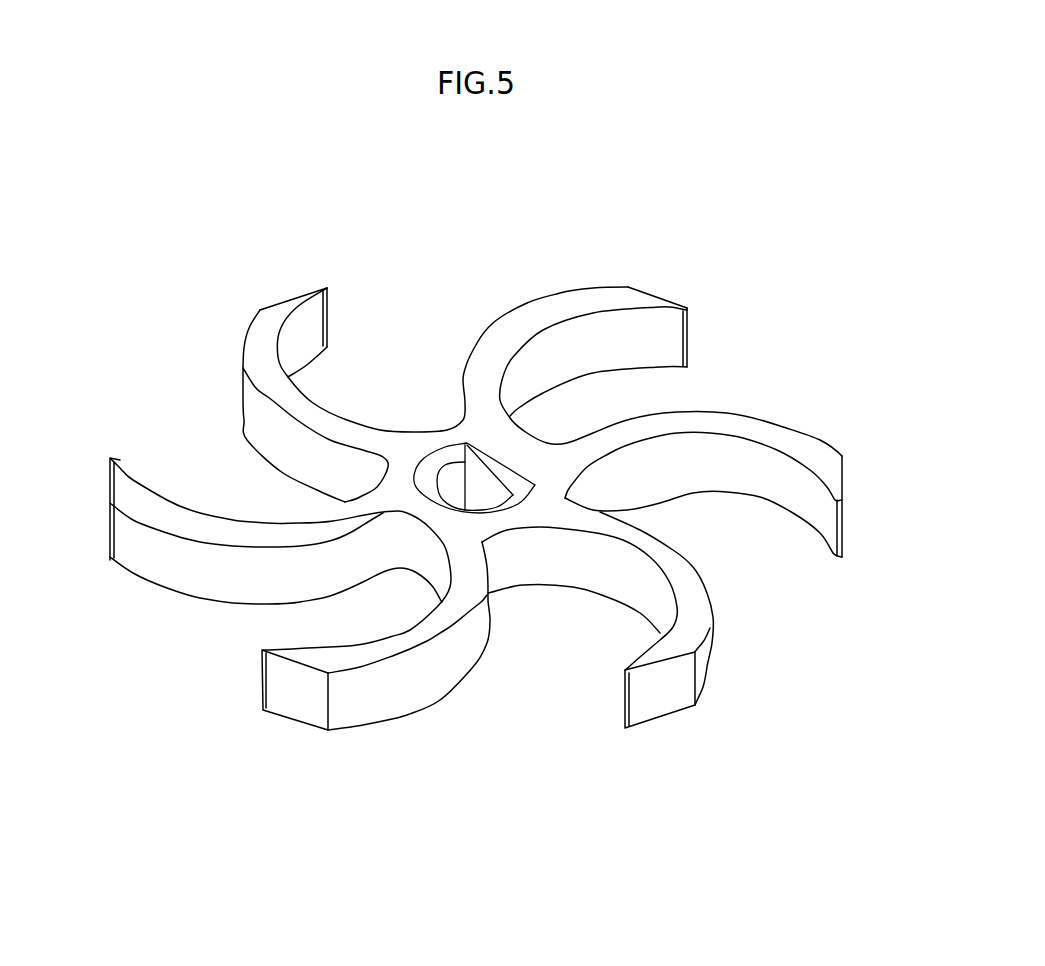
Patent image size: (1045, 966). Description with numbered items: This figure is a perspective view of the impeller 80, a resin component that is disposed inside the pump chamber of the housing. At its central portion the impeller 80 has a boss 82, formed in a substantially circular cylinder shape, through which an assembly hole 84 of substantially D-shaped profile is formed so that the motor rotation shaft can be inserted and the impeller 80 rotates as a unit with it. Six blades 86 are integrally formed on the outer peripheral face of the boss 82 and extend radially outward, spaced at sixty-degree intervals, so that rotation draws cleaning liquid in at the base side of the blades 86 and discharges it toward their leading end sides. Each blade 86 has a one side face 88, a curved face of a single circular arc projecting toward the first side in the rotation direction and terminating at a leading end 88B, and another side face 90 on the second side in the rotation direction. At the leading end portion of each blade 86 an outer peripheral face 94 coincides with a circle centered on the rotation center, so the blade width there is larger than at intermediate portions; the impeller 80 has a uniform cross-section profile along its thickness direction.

The impeller 80 is at (699, 186).
The boss 82 is at (428, 438).
The assembly hole 84 is at (483, 493).
The blade 86 is at (485, 506).
The one side face 88 is at (262, 426).
The leading end 88B is at (629, 286).
The another side face 90 is at (304, 338).
The outer peripheral face 94 is at (668, 292).